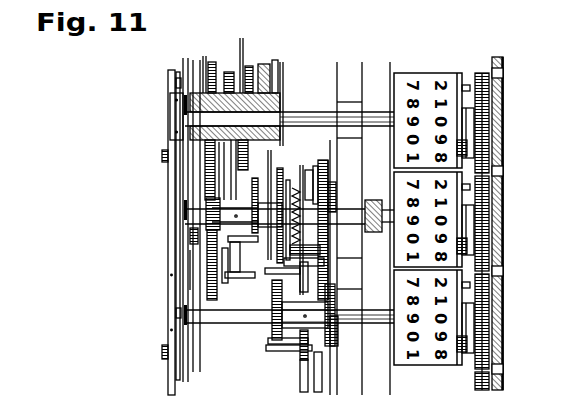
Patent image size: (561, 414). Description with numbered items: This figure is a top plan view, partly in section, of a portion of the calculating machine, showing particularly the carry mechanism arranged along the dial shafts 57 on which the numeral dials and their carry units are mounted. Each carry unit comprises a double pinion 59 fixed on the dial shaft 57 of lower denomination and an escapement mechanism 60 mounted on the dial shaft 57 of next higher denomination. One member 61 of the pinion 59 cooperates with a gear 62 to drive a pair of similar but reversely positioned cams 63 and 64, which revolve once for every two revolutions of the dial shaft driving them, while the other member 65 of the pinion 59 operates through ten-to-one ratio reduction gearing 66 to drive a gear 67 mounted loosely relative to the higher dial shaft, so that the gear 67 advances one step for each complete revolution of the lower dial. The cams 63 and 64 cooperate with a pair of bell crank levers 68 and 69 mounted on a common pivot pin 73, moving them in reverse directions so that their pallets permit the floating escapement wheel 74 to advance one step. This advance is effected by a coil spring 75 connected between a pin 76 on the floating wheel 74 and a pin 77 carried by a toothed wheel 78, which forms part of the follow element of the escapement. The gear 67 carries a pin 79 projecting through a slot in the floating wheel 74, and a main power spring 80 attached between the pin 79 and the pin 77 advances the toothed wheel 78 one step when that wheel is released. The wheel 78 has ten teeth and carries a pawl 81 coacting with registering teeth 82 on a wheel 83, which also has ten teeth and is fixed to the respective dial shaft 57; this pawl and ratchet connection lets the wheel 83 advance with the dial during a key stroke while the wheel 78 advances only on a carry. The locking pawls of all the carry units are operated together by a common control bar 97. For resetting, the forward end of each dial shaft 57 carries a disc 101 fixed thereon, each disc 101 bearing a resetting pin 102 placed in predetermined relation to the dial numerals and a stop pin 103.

The dial shaft 57 is at (372, 112).
The double pinion 59 is at (206, 216).
The escapement mechanism 60 is at (266, 66).
The member of the pinion 61 is at (212, 62).
The gear 62 is at (258, 244).
The cam 63 is at (256, 196).
The cam 64 is at (268, 186).
The member of the pinion 65 is at (190, 236).
The ten-to-one ratio reduction gearing 66 is at (205, 194).
The gear 67 is at (330, 172).
The bell crank lever 68 is at (225, 283).
The bell crank lever 69 is at (190, 268).
The common pivot pin 73 is at (242, 278).
The escapement wheel 74 is at (241, 60).
The coil spring 75 is at (318, 166).
The pin 76 is at (244, 168).
The pin 77 is at (210, 52).
The toothed wheel 78 is at (249, 66).
The pin 79 is at (219, 172).
The main power spring 80 is at (229, 72).
The pawl 81 is at (282, 263).
The registering teeth 82 is at (270, 88).
The wheel 83 is at (268, 68).
The common control bar 97 is at (283, 99).
The disc 101 is at (168, 100).
The resetting pin 102 is at (162, 156).
The stop pin 103 is at (177, 78).